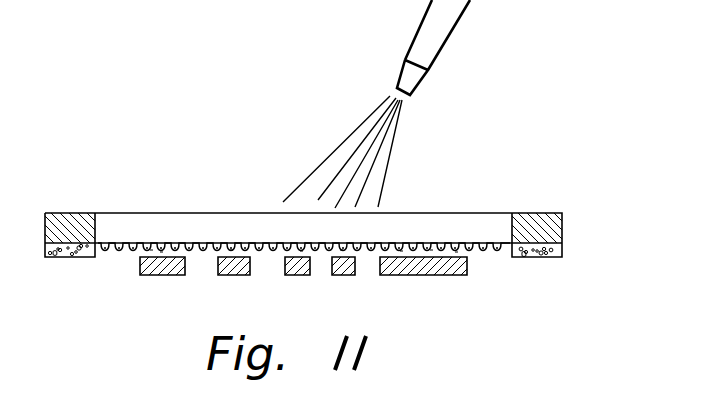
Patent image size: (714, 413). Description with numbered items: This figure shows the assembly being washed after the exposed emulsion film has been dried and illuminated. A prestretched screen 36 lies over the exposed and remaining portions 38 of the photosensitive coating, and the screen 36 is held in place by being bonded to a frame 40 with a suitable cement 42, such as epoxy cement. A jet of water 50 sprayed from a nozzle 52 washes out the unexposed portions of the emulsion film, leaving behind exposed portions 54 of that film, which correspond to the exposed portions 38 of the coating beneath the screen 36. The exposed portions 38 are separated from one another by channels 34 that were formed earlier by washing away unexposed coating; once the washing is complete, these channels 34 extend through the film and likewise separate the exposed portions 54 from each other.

The spray nozzle 52 is at (457, 15).
The spray 50 is at (390, 152).
The substrate plate 40 is at (329, 257).
The porous end portion 42 is at (58, 258).
The scalloped surface 36 is at (491, 253).
The conductor blocks 38 is at (143, 274).
The gaps between blocks 34 is at (203, 265).
The sprayed coating 54 is at (235, 248).